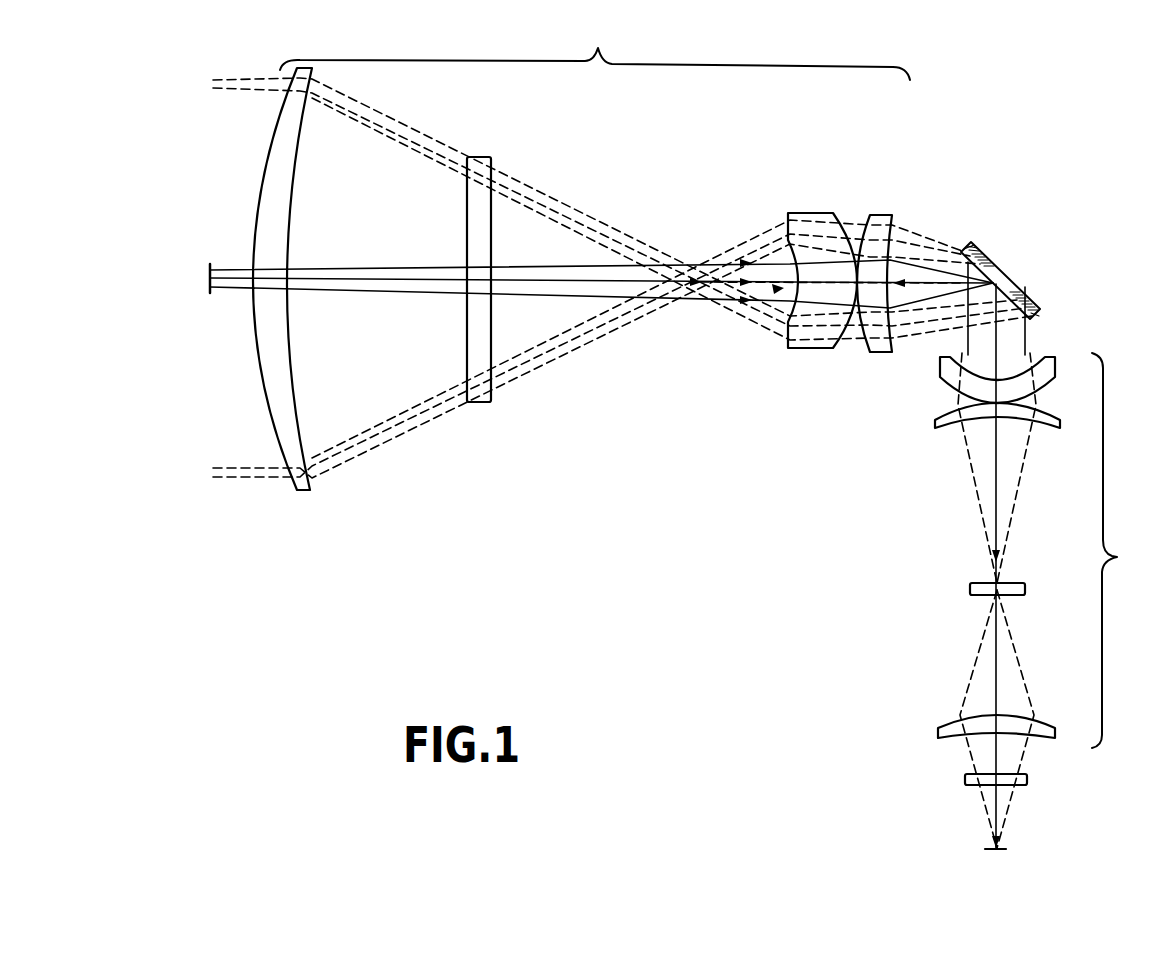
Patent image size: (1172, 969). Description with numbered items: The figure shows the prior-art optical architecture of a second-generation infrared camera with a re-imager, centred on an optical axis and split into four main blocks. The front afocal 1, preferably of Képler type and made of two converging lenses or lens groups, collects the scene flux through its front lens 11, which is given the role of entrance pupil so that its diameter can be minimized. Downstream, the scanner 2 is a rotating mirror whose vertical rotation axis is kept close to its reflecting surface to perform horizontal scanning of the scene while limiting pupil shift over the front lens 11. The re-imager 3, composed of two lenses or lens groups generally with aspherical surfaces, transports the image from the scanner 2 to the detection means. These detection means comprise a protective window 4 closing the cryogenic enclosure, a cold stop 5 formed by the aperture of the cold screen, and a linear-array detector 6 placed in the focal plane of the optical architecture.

The front afocal 1 is at (598, 46).
The scanner 2 is at (1003, 275).
The re-imager 3 is at (1118, 557).
The protective window 4 is at (965, 780).
The cold stop 5 is at (977, 800).
The detector 6 is at (983, 850).
The front lens 11 is at (310, 490).